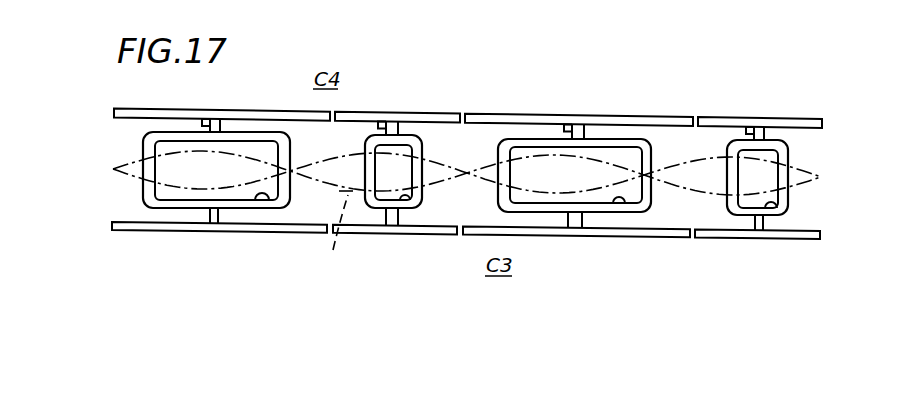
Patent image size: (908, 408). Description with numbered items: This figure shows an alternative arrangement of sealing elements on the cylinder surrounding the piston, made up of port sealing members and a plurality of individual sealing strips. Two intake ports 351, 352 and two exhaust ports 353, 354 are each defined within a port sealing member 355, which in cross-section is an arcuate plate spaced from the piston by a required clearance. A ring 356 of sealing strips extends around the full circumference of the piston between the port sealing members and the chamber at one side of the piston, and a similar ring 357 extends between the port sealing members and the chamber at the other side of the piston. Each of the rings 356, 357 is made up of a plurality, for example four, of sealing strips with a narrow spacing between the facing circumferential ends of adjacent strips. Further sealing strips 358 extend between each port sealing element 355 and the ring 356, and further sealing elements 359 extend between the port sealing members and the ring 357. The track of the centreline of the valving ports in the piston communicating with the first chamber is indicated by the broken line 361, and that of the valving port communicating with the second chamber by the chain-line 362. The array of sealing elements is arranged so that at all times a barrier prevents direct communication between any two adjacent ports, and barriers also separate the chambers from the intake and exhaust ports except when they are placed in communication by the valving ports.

The intake port 351 is at (262, 200).
The intake port 352 is at (616, 203).
The exhaust port 353 is at (408, 203).
The exhaust port 354 is at (766, 206).
The port sealing member 355 is at (172, 210).
The ring of sealing strips 356 is at (260, 231).
The ring of sealing strips 357 is at (247, 109).
The sealing strip 358 is at (211, 214).
The sealing element 359 is at (206, 119).
The broken line 361 is at (355, 233).
The chain-line 362 is at (433, 164).